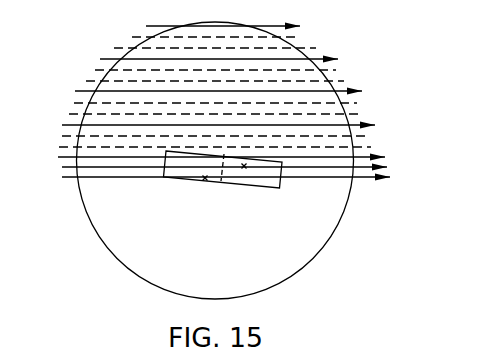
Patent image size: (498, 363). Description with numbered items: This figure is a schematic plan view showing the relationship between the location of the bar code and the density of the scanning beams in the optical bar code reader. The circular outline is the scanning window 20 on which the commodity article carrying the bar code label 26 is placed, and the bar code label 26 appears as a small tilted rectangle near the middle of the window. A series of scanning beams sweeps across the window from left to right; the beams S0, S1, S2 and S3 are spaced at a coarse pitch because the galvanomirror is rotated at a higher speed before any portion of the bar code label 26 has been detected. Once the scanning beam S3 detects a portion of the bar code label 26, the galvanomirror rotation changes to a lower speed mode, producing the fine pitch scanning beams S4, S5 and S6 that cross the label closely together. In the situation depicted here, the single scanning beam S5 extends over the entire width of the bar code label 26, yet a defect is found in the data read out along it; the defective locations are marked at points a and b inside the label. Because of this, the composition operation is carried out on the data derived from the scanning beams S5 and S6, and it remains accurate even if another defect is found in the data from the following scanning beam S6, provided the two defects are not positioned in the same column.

The scanning window 20 is at (314, 239).
The bar code label 26 is at (286, 192).
The scanning beam S0 is at (211, 29).
The scanning beam S1 is at (205, 60).
The scanning beam S2 is at (204, 92).
The scanning beam S3 is at (206, 125).
The scanning beam S4 is at (210, 158).
The scanning beam S5 is at (211, 176).
The scanning beam S6 is at (212, 195).
The point a is at (253, 169).
The point b is at (209, 192).